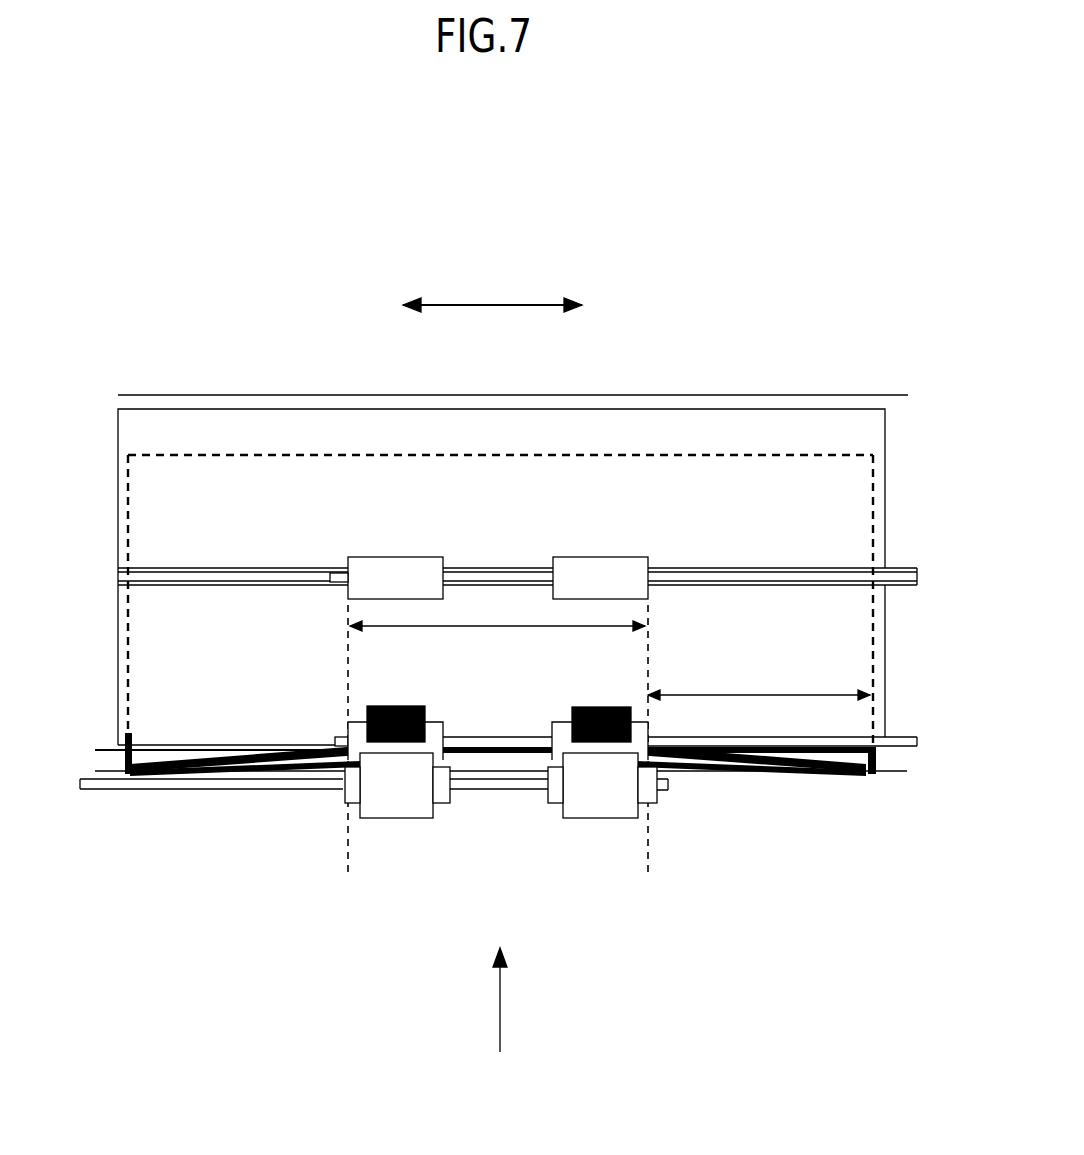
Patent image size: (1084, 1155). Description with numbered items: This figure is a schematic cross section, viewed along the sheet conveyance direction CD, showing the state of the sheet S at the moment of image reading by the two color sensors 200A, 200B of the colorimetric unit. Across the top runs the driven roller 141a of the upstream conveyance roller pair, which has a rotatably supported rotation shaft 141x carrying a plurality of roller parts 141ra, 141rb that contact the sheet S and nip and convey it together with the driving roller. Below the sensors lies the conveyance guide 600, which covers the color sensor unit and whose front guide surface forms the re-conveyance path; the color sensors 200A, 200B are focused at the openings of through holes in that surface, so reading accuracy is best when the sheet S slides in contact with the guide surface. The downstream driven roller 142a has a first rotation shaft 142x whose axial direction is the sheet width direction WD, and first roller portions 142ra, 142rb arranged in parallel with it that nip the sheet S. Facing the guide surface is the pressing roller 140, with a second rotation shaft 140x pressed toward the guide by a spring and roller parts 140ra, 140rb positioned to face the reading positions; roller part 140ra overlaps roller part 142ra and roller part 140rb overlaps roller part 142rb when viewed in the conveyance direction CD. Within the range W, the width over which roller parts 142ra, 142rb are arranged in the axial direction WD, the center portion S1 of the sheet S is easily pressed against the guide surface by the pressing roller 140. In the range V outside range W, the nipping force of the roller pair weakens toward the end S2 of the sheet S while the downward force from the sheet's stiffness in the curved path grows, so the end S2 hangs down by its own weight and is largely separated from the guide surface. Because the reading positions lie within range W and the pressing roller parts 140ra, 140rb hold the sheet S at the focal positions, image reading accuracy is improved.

The pressing roller 140 is at (478, 785).
The rotation shaft 140x is at (80, 781).
The roller part 140ra is at (616, 757).
The roller part 140rb is at (370, 790).
The driven roller 141a is at (492, 578).
The rotation shaft 141x is at (917, 577).
The roller part 141ra is at (583, 570).
The roller part 141rb is at (435, 570).
The driven roller 142a is at (505, 750).
The rotation shaft 142x is at (917, 742).
The roller part 142ra is at (640, 732).
The roller part 142rb is at (357, 735).
The color sensor 200A is at (602, 707).
The color sensor 200B is at (397, 706).
The conveyance guide 600 is at (107, 747).
The sheet S is at (862, 473).
The center portion S1 is at (643, 808).
The end S2 is at (870, 774).
The range W is at (500, 626).
The axial direction WD is at (492, 287).
The range V is at (759, 682).
The sheet conveyance direction CD is at (519, 1000).